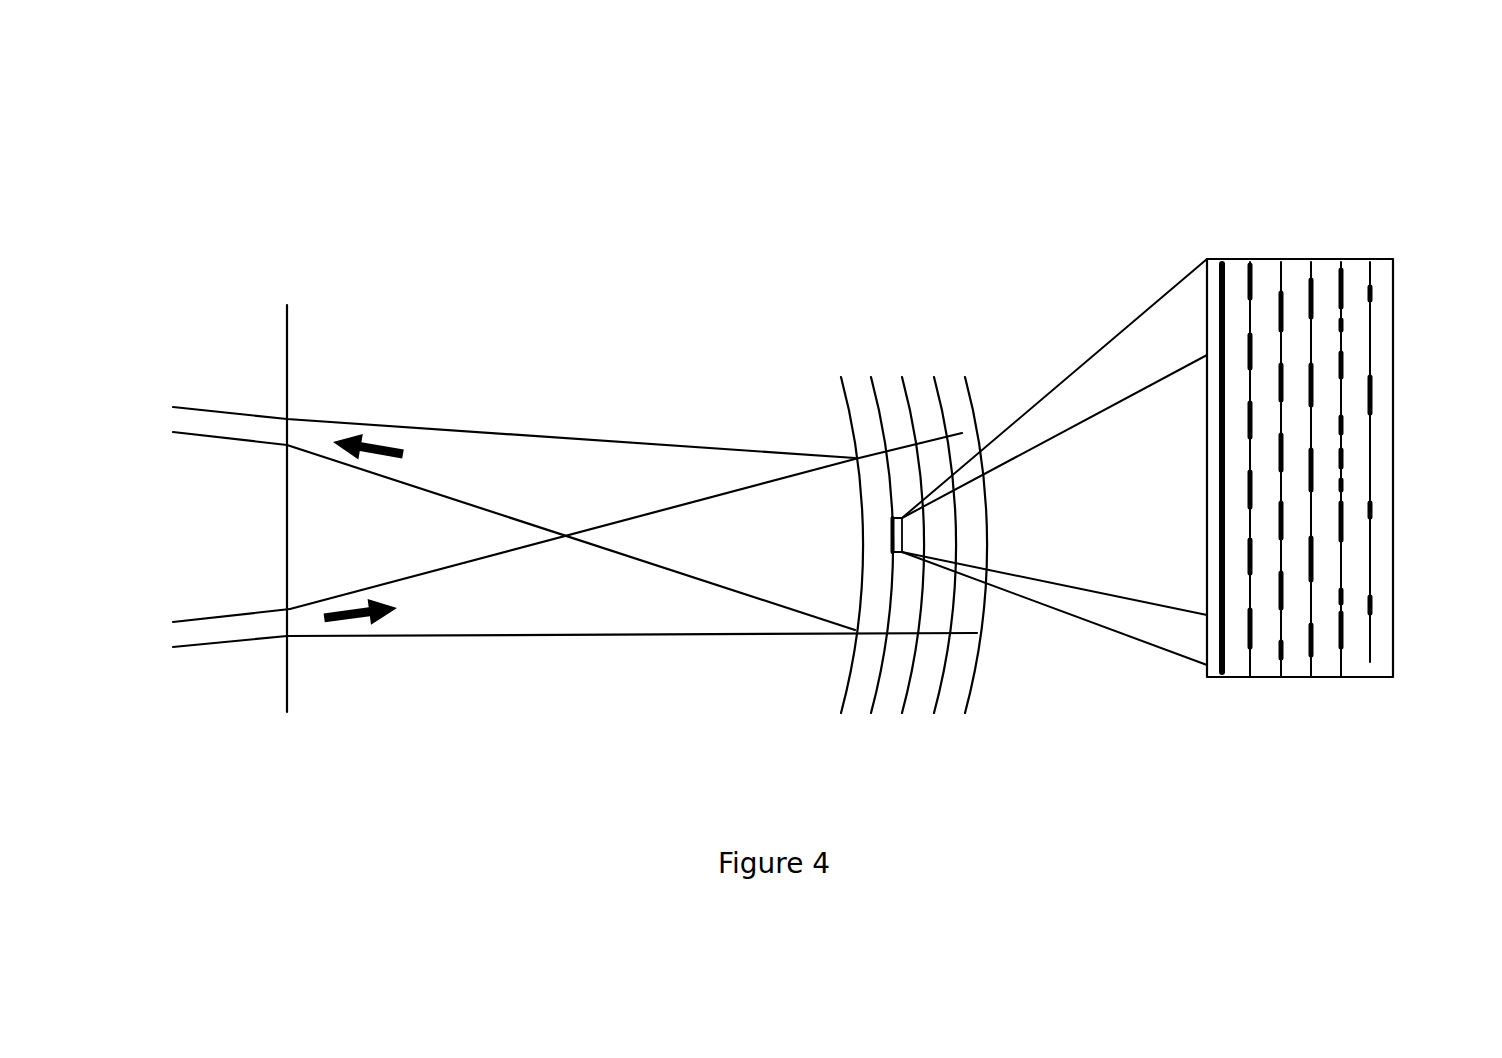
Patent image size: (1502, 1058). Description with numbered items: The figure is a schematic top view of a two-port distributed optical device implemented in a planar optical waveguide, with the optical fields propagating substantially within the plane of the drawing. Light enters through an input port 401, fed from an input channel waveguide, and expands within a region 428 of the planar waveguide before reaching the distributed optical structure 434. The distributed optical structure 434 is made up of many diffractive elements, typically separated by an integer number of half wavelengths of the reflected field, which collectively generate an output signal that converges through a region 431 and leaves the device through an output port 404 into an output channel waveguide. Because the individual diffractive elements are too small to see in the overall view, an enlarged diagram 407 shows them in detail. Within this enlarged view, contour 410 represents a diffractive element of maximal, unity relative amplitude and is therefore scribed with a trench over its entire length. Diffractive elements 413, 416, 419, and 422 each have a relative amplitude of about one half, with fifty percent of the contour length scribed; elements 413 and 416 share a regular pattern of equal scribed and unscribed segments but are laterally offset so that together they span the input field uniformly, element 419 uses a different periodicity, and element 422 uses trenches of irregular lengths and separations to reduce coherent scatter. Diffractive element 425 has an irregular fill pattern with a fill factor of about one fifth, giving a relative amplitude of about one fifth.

The input port 401 is at (287, 622).
The output port 404 is at (283, 432).
The enlarged diagram 407 is at (1256, 181).
The contour 410 is at (1220, 676).
The diffractive element 413 is at (1251, 677).
The diffractive element 416 is at (1282, 677).
The diffractive element 419 is at (1311, 677).
The diffractive element 422 is at (1341, 677).
The diffractive element 425 is at (1370, 662).
The region 428 is at (626, 529).
The region 431 is at (571, 532).
The distributed optical structure 434 is at (817, 323).